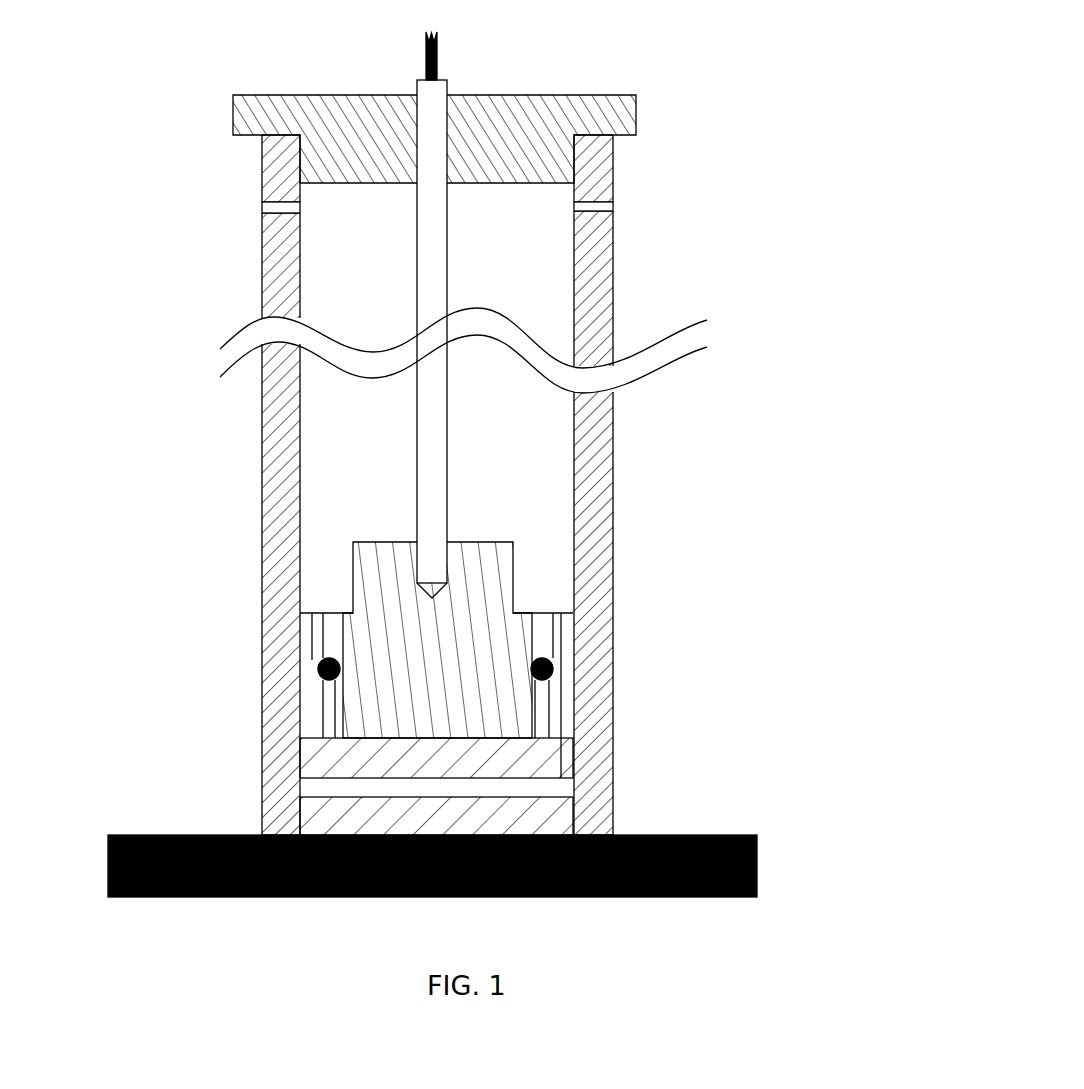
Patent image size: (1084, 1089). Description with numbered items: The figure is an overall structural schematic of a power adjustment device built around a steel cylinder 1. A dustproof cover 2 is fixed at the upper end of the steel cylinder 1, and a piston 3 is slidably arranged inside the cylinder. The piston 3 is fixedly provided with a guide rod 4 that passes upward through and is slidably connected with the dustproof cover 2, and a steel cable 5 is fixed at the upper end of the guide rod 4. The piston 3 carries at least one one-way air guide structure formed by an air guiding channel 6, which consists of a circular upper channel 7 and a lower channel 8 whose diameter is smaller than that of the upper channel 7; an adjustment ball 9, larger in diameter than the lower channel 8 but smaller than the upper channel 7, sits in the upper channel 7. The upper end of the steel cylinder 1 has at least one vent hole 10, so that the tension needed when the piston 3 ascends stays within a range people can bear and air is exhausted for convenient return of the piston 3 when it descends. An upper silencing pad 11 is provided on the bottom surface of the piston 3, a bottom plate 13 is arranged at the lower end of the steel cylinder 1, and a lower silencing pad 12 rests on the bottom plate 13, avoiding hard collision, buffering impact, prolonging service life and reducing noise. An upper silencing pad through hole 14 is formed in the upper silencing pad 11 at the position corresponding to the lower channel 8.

The steel cylinder 1 is at (590, 458).
The dustproof cover 2 is at (357, 135).
The piston 3 is at (498, 588).
The guide rod 4 is at (424, 233).
The steel cable 5 is at (437, 68).
The air guiding channel 6 is at (555, 655).
The upper channel 7 is at (540, 625).
The lower channel 8 is at (540, 715).
The adjustment ball 9 is at (548, 672).
The vent hole 10 is at (595, 211).
The upper silencing pad 11 is at (400, 763).
The lower silencing pad 12 is at (335, 818).
The bottom plate 13 is at (217, 835).
The upper silencing pad through hole 14 is at (540, 762).